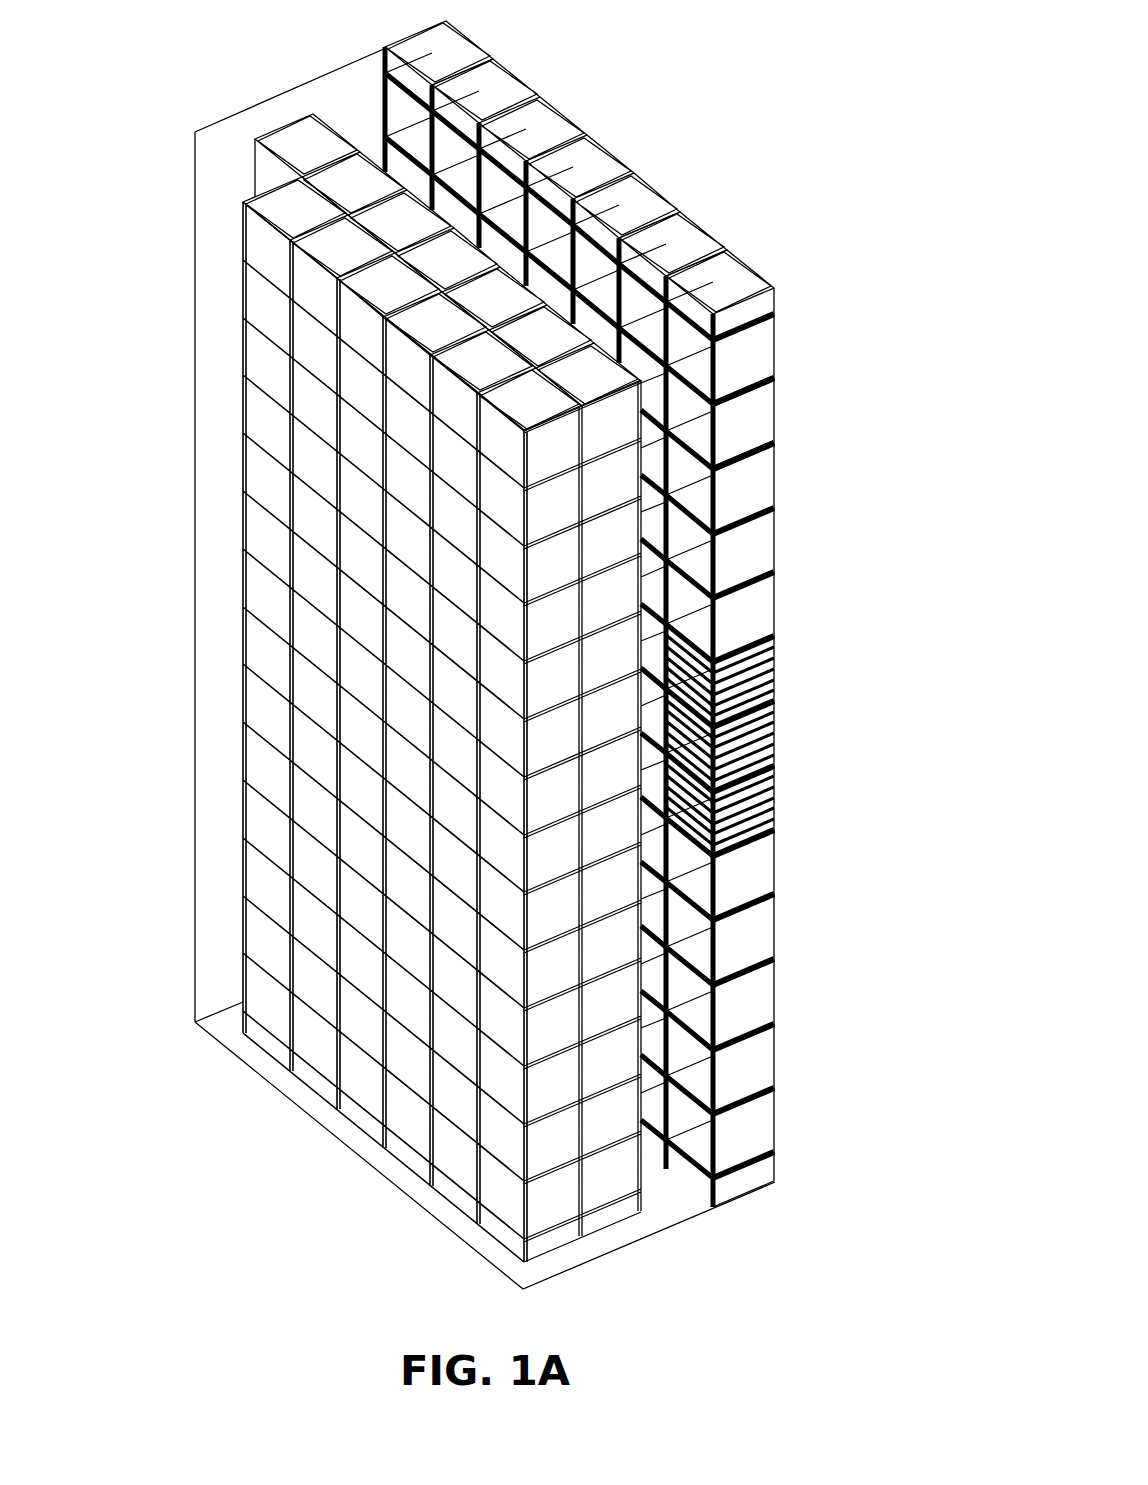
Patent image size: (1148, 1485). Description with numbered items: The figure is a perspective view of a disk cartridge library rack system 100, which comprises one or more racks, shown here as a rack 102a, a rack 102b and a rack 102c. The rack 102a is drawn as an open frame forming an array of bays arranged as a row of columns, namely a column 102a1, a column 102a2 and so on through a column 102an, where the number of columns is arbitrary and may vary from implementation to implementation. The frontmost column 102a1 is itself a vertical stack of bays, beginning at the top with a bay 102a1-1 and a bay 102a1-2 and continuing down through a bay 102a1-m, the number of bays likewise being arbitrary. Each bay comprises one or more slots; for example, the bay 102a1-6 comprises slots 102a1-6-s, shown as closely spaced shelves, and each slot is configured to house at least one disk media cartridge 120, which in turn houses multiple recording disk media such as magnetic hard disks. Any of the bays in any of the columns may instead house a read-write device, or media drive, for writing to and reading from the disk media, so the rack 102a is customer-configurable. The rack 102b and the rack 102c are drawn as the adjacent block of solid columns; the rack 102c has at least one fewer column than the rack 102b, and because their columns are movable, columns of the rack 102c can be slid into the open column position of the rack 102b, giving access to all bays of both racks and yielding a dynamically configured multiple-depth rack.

The disk cartridge library rack system 100 is at (187, 44).
The rack 102a is at (746, 1195).
The rack 102b is at (614, 1232).
The third rack 102c is at (558, 1258).
The column 102a1 is at (742, 281).
The column 102a2 is at (695, 236).
The column 102an is at (455, 45).
The bay 102a1-1 is at (766, 351).
The bay 102a1-2 is at (766, 419).
The bay 102a1-6 is at (757, 705).
The slots 102a1-6-s is at (786, 642).
The disk media cartridge 120 is at (786, 768).
The bay 102a1-m is at (763, 1068).